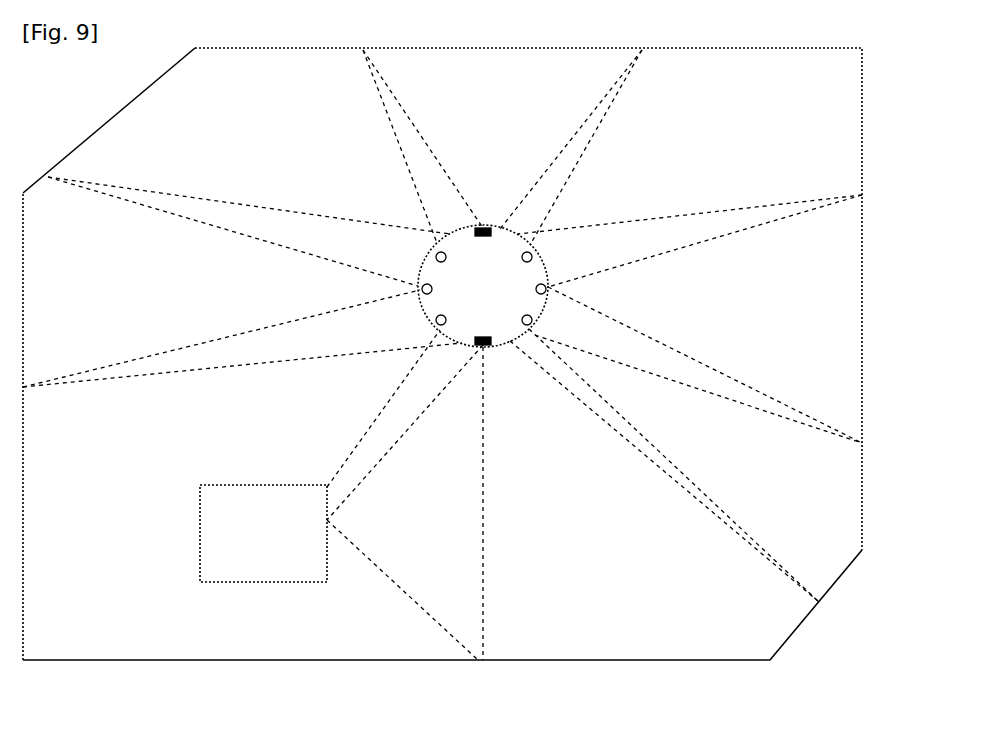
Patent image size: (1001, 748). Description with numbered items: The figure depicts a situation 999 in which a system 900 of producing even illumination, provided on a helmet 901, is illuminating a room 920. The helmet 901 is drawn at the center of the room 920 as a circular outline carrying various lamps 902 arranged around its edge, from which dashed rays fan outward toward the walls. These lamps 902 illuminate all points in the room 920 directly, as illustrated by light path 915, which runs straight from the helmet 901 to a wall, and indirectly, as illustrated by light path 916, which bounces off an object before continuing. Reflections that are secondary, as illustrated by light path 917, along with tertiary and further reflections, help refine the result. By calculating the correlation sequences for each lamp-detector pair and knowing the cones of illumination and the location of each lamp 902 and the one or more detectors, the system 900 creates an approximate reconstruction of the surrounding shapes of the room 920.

The situation 999 is at (702, 732).
The system of producing even illumination 900 is at (345, 163).
The helmet 901 is at (528, 322).
The lamps 902 is at (532, 255).
The light path 915 is at (170, 352).
The light path 916 is at (410, 597).
The light path 917 is at (483, 600).
The room 920 is at (25, 523).